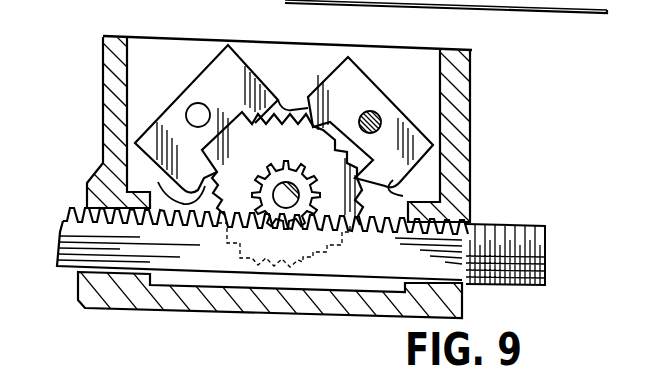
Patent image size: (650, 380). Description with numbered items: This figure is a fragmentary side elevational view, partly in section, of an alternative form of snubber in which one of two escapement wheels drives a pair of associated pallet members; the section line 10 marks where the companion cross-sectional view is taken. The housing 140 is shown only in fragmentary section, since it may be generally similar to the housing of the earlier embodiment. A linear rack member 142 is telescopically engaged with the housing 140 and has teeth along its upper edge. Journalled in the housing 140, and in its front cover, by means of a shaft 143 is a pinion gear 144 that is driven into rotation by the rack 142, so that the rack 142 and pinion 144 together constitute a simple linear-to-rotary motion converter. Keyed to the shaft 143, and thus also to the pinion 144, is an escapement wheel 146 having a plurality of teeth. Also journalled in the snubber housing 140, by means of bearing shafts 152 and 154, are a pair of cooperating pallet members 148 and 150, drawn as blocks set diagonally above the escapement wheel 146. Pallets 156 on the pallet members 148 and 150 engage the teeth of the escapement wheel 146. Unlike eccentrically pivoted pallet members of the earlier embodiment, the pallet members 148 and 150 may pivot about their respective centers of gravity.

The section line 10— 10 is at (153, 18).
The housing 140 is at (100, 162).
The linear rack member 142 is at (136, 249).
The shaft 143 is at (270, 185).
The pinion gear 144 is at (302, 184).
The escapement wheel 146 is at (320, 155).
The pallet member 148 is at (359, 101).
The pallet member 150 is at (238, 97).
The bearing shaft 152 is at (378, 114).
The bearing shaft 154 is at (187, 113).
The pallets 156 is at (308, 109).